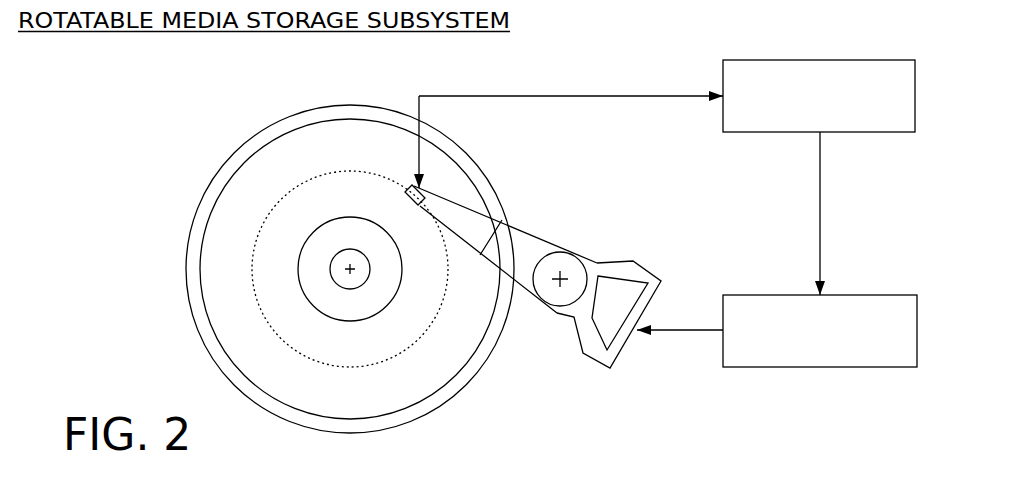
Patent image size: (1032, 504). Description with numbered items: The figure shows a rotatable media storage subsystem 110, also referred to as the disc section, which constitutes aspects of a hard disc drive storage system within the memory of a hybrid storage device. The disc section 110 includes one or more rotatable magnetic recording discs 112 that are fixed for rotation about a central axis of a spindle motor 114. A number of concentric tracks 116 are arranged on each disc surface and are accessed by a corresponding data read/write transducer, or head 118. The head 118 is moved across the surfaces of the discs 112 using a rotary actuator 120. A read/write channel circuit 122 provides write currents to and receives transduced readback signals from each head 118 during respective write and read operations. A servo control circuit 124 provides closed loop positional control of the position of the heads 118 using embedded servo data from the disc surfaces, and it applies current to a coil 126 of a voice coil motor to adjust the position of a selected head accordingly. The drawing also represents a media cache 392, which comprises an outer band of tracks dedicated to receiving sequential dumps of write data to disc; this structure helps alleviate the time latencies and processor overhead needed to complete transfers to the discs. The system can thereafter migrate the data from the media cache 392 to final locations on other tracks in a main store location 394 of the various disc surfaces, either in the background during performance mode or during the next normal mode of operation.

The rotatable media storage subsystem 110 is at (220, 93).
The rotatable magnetic recording disc 112 is at (220, 315).
The spindle motor 114 is at (353, 237).
The tracks 116 is at (355, 367).
The data read/write transducer (head) 118 is at (408, 188).
The rotary actuator 120 is at (593, 240).
The read/write (R/W) channel circuit 122 is at (820, 60).
The servo control circuit 124 is at (858, 293).
The coil 126 is at (648, 272).
The media cache 392 is at (207, 197).
The main store location 394 is at (225, 228).